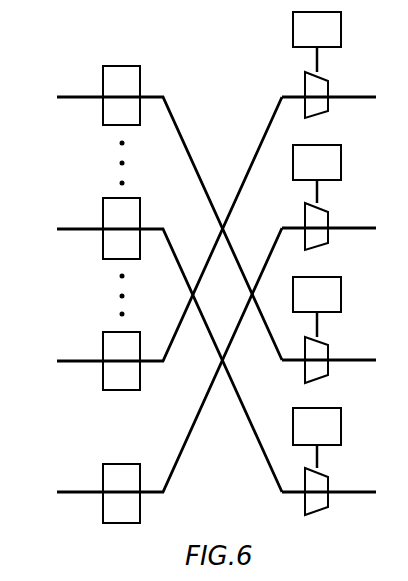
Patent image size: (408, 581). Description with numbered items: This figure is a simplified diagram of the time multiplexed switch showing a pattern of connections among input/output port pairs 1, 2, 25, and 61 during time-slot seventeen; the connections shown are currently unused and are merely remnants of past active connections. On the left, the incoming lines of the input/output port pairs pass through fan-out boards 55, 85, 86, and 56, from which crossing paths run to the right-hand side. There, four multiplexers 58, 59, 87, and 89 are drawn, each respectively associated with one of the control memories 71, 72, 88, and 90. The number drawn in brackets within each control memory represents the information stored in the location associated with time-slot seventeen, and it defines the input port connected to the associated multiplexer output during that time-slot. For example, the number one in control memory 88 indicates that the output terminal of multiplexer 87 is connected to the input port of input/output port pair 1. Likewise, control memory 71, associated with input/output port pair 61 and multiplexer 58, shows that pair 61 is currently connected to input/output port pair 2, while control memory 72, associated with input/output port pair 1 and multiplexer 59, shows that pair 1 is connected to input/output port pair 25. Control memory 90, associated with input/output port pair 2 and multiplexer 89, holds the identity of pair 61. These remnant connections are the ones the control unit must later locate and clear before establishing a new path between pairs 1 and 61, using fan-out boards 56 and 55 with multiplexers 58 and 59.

The input/output port pair 61 is at (169, 216).
The input/output port pair 25 is at (169, 348).
The input/output port pair 2 is at (169, 229).
The input/output port pair 1 is at (169, 361).
The fan-out board 55 is at (141, 70).
The input register 85 is at (141, 203).
The input register 86 is at (141, 382).
The fan-out board 56 is at (141, 516).
The multiplexer 58 is at (330, 80).
The multiplexer 87 is at (330, 211).
The multiplexer 89 is at (330, 345).
The multiplexer 59 is at (330, 475).
The control memory 71 is at (342, 17).
The control memory 88 is at (342, 150).
The control memory 90 is at (342, 282).
The control memory 72 is at (342, 413).